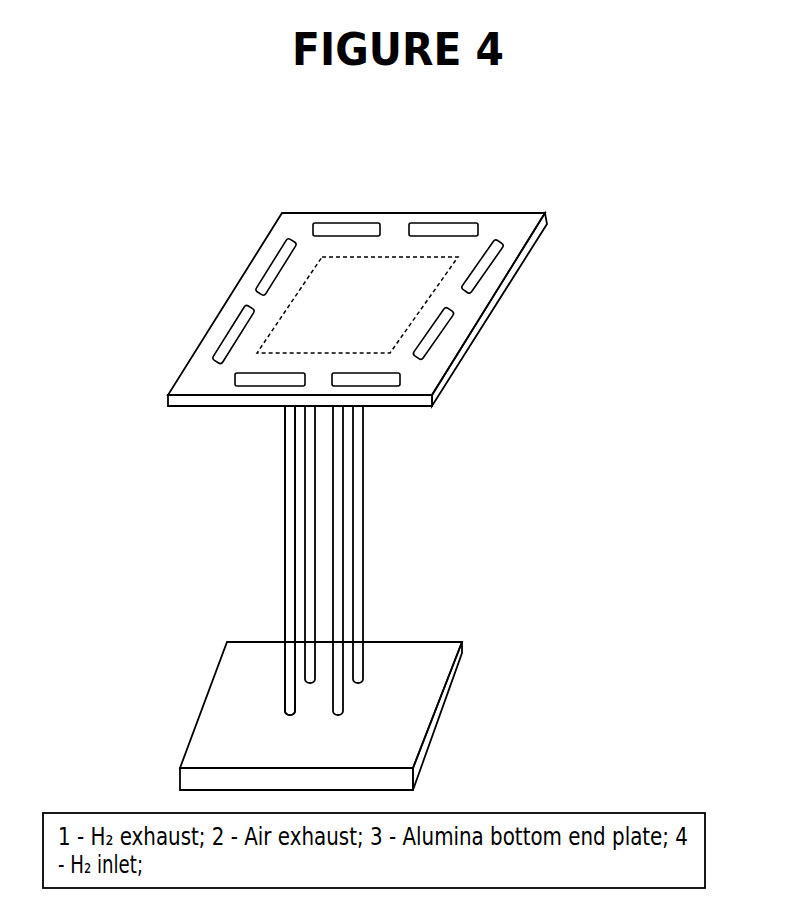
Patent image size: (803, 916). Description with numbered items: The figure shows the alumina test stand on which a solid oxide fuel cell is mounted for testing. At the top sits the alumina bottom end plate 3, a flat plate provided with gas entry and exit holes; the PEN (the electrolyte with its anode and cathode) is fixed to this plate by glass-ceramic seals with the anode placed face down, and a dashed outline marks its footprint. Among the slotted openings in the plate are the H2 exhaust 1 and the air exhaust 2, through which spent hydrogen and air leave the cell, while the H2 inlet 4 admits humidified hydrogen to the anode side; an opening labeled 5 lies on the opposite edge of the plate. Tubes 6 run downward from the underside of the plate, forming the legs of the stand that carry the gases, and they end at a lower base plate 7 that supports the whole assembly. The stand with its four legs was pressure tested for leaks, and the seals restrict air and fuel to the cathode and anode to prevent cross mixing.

The H2 exhaust 1 is at (356, 278).
The air exhaust 2 is at (242, 301).
The alumina bottom end plate 3 is at (348, 309).
The H2 inlet 4 is at (276, 455).
The Air inlet 5 is at (469, 300).
The Tubes 6 is at (343, 560).
The Base plate 7 is at (321, 716).